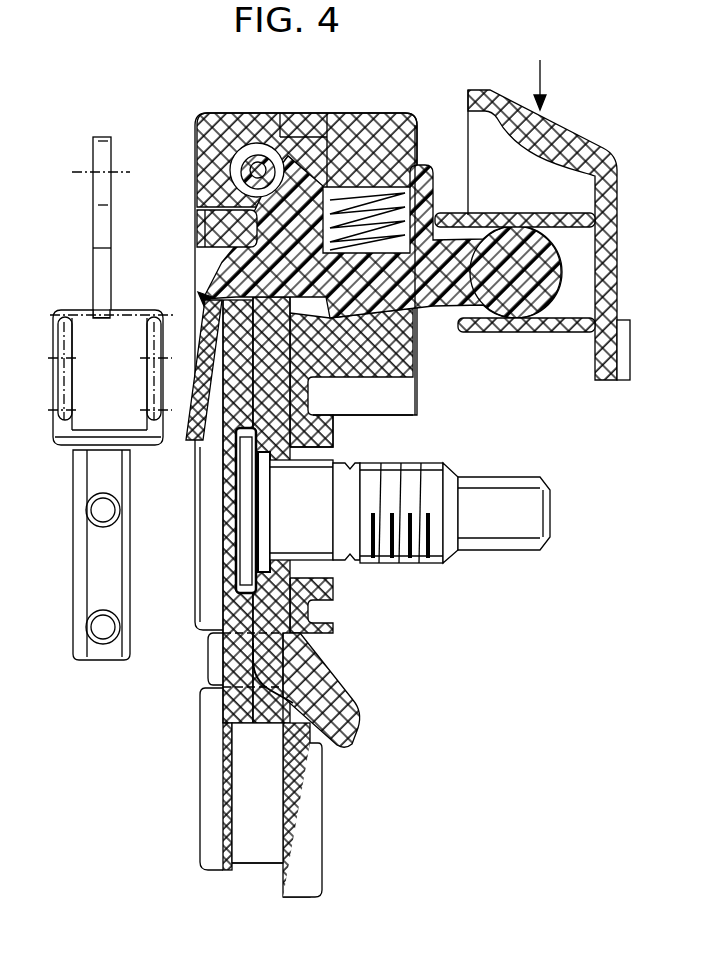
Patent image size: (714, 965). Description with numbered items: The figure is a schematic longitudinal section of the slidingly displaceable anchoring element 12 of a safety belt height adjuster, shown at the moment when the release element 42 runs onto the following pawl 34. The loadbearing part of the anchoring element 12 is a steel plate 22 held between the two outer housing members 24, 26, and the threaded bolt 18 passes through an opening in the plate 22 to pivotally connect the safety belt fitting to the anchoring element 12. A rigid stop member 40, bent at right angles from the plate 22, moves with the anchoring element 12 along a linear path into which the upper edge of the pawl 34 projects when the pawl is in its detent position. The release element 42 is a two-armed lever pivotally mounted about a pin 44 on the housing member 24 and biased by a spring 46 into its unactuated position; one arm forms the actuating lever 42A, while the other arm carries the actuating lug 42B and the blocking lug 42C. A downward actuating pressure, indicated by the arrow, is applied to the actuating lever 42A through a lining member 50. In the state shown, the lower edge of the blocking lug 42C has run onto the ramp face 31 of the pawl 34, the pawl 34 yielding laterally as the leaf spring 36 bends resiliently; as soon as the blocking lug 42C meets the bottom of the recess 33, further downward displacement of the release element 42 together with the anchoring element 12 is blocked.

The anchoring element 12 is at (340, 437).
The threaded bolt 18 is at (485, 497).
The plate 22 is at (225, 310).
The housing member 24 is at (237, 650).
The housing member 26 is at (407, 362).
The ramp face 31 is at (120, 312).
The recess 33 is at (115, 318).
The pawl 34 is at (83, 395).
The leaf spring 36 is at (97, 470).
The rigid stop member 40 is at (213, 223).
The release element 42 is at (443, 297).
The actuating lever 42A is at (510, 233).
The actuating lug 42B is at (100, 262).
The blocking lug 42C is at (102, 310).
The pin 44 is at (290, 150).
The spring 46 is at (403, 207).
The lining member 50 is at (592, 158).